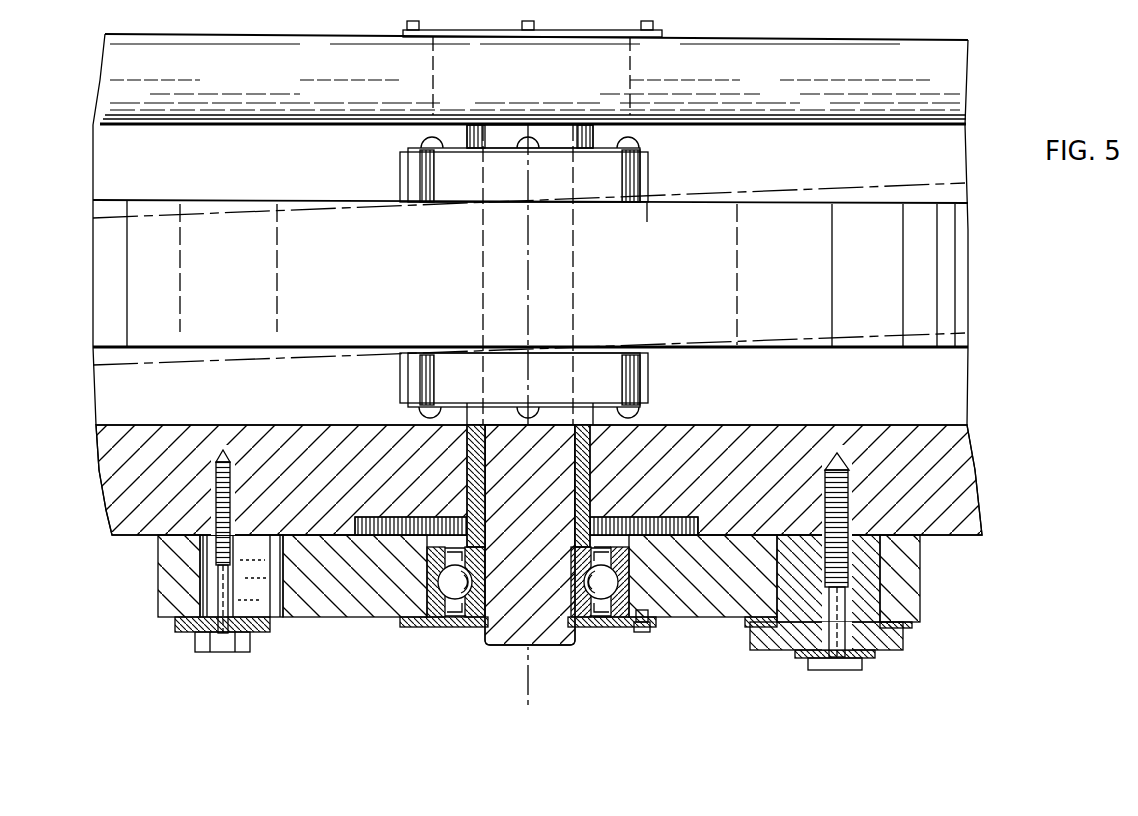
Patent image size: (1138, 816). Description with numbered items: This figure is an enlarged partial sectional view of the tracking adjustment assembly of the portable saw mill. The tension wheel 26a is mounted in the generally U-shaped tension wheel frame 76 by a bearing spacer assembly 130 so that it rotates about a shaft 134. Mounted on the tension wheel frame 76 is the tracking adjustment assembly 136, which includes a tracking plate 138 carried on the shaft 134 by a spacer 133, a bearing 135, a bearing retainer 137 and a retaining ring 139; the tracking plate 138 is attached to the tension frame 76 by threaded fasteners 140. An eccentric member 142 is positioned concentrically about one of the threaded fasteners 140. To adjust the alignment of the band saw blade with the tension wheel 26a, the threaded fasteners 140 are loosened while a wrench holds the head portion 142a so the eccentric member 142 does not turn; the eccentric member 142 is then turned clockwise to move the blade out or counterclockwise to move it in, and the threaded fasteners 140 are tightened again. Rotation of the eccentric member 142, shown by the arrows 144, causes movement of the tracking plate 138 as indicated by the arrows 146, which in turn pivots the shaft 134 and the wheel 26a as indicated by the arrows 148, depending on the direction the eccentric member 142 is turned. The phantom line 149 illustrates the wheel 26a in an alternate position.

The tension wheel 26a is at (962, 284).
The phantom line 149 is at (965, 183).
The bearing spacer assembly 130 is at (648, 177).
The shaft 134 is at (578, 299).
The spacer 133 is at (590, 476).
The tension wheel frame 76 is at (960, 456).
The tracking plate 138 is at (920, 560).
The threaded fasteners 140 is at (231, 497).
The eccentric member 142 is at (778, 596).
The head portion 142a is at (790, 640).
The bearing 135 is at (432, 632).
The tracking adjustment assembly 136 is at (390, 630).
The bearing retainer 137 is at (610, 632).
The retaining ring 139 is at (588, 630).
The arrows 146 is at (150, 574).
The arrows 148 is at (688, 664).
The arrows 144 is at (813, 699).